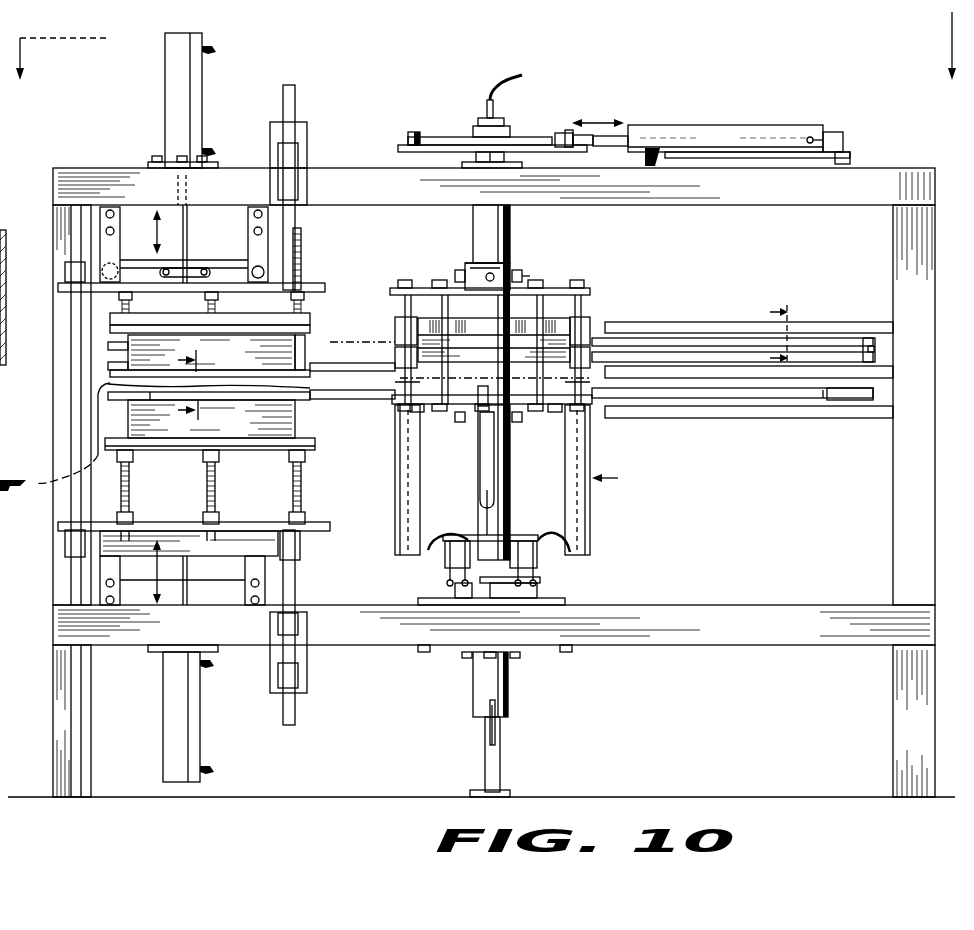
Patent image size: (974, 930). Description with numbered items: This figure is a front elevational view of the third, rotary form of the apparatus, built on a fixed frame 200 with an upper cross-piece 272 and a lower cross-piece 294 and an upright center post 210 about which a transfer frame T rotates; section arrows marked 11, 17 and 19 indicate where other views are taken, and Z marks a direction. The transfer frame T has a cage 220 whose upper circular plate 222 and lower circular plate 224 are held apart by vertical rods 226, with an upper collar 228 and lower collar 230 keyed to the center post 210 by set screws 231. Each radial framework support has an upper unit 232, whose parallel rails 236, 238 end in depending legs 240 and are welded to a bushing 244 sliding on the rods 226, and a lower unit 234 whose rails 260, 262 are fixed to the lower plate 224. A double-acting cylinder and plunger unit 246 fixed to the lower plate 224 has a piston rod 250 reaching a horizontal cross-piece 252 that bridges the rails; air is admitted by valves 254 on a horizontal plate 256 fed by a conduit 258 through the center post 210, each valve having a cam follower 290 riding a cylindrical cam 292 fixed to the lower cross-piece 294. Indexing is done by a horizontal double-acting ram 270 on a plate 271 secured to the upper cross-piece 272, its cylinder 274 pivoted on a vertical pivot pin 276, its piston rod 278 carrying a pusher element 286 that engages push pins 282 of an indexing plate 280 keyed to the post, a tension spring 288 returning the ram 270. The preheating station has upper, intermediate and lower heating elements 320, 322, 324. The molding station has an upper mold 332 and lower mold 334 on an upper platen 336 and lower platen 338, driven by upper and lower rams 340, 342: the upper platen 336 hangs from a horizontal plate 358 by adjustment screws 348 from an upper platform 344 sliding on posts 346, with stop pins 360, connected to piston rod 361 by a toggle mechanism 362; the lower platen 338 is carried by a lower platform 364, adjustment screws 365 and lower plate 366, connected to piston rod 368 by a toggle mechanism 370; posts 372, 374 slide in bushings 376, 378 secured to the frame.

The section line 11- 11 is at (484, 61).
The section line 17- 17 is at (764, 334).
The section line 19- 19 is at (176, 384).
The fixed frame 200 is at (878, 504).
The center post 210 is at (497, 240).
The cage 220 is at (466, 286).
The upper circular plate 222 is at (414, 288).
The lower circular plate 224 is at (398, 402).
The vertically extending rods 226 is at (590, 296).
The upper collar 228 is at (476, 264).
The lower collar 230 is at (484, 448).
The set screws 231 is at (522, 272).
The upper framework support unit 232 is at (652, 336).
The lower framework support unit 234 is at (684, 408).
The horizontal rail 236 is at (395, 378).
The horizontal rail 238 is at (590, 362).
The depending legs 240 is at (866, 348).
The bushing 244 is at (590, 318).
The double-acting cylinder and plunger unit 246 is at (486, 452).
The piston rod 250 is at (482, 400).
The horizontal cross-piece 252 is at (494, 340).
The valves 254 is at (446, 548).
The horizontal plate 256 is at (468, 540).
The conduit 258 is at (508, 84).
The horizontal rail 260 is at (415, 410).
The horizontal rail 262 is at (556, 410).
The double-acting ram 270 is at (764, 116).
The plate 271 is at (846, 158).
The upper cross-piece 272 is at (494, 186).
The cylinder 274 is at (725, 131).
The vertical pivot pin 276 is at (843, 140).
The piston rod 278 is at (650, 110).
The indexing plate 280 is at (408, 138).
The push pin 282 is at (416, 132).
The pusher element 286 is at (568, 128).
The tension spring 288 is at (656, 164).
The cam follower 290 is at (450, 582).
The cylindrical cam 292 is at (522, 596).
The lower cross-piece 294 is at (494, 701).
The upper heating element 320 is at (795, 322).
The intermediate heating element 322 is at (712, 368).
The lower heating element 324 is at (792, 420).
The upper mold 332 is at (206, 353).
The lower mold 334 is at (211, 420).
The upper platen 336 is at (310, 330).
The lower platen 338 is at (332, 402).
The upper double acting ram 340 is at (165, 88).
The lower double acting ram 342 is at (165, 753).
The upper platform 344 is at (320, 292).
The posts 346 is at (70, 585).
The vertical adjustment screws 348 is at (301, 254).
The horizontal plate 358 is at (310, 318).
The adjustable stop pins 360 is at (305, 372).
The piston rod 361 is at (188, 220).
The toggle mechanism 362 is at (250, 252).
The lower platform 364 is at (302, 548).
The adjustment screws 365 is at (216, 506).
The lower plate 366 is at (312, 450).
The piston rod 368 is at (186, 592).
The toggle mechanism 370 is at (248, 564).
The post 372 is at (296, 102).
The post 374 is at (296, 716).
The bushing 376 is at (293, 162).
The bushing 378 is at (292, 690).
The transfer frame T is at (615, 479).
The direction Z is at (55, 360).